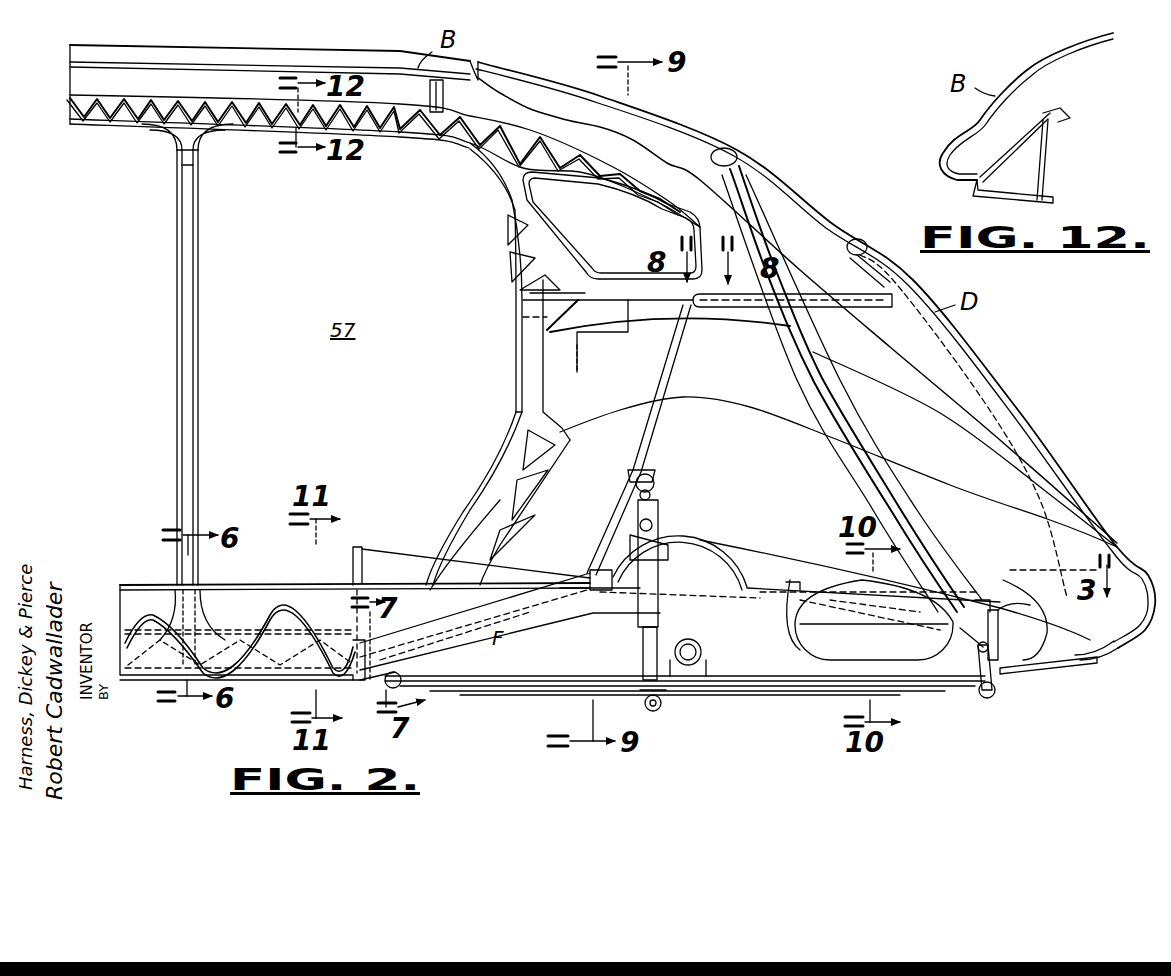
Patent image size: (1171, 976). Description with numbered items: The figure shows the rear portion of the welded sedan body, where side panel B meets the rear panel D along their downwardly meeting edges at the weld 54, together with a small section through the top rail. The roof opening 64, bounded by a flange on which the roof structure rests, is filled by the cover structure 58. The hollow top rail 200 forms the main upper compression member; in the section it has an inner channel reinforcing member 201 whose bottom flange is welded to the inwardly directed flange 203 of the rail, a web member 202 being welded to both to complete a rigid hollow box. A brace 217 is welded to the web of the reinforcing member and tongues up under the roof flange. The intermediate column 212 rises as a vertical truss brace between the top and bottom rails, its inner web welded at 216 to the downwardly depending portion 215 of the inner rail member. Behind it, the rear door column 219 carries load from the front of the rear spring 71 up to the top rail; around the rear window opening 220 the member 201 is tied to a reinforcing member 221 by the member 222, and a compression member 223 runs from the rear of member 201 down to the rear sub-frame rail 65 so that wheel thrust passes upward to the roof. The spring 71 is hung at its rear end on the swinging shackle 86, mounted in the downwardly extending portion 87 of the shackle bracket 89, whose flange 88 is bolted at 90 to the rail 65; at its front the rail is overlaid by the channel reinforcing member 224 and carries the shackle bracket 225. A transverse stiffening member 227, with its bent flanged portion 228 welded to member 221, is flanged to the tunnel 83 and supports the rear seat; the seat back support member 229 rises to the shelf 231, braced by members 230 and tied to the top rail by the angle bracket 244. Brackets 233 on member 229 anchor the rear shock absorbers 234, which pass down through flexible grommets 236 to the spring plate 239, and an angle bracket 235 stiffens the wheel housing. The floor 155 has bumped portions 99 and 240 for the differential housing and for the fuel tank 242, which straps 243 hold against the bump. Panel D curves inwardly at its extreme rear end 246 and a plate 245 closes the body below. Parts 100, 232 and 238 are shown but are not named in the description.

In FIG. 2, the welded joint 54 is at (992, 372).
In FIG. 2, the cover structure 58 is at (70, 50).
In FIG. 2, the roof opening 64 is at (70, 70).
In FIG. 2, the rear sub-frame side rail 65 is at (775, 572).
In FIG. 2, the rear supporting spring 71 is at (760, 680).
In FIG. 2, the tunnel 83 is at (237, 632).
In FIG. 2, the swinging shackle 86 is at (980, 662).
In FIG. 2, the downwardly extending portion 87 is at (1015, 645).
In FIG. 2, the flange 88 is at (874, 620).
In FIG. 2, the shackle bracket 89 is at (1022, 608).
In FIG. 2, the bolt 90 is at (990, 604).
In FIG. 2, the bumped portion 99 is at (692, 542).
In FIG. 2, the spring bushing 100 is at (694, 642).
In FIG. 2, the floor 155 is at (239, 671).
In FIG. 12, the top rail 200 is at (952, 140).
In FIG. 2, the inner channel reinforcing member 201 is at (462, 165).
In FIG. 12, the inner channel reinforcing member 201 is at (1060, 118).
In FIG. 12, the web member 202 is at (1028, 133).
In FIG. 12, the inwardly directed flange 203 is at (975, 195).
In FIG. 2, the intermediate column 212 is at (193, 262).
In FIG. 2, the downwardly depending portion 215 is at (200, 140).
In FIG. 2, the weld 216 is at (198, 170).
In FIG. 2, the brace 217 is at (409, 95).
In FIG. 2, the rear door column 219 is at (506, 222).
In FIG. 2, the rear window opening 220 is at (612, 225).
In FIG. 2, the reinforcing member 221 is at (472, 500).
In FIG. 2, the connecting member 222 is at (528, 378).
In FIG. 2, the compression member 223 is at (815, 352).
In FIG. 2, the reinforcing member 224 is at (412, 660).
In FIG. 2, the shackle bracket 225 is at (378, 682).
In FIG. 2, the transverse stiffening member 227 is at (352, 556).
In FIG. 2, the bent flanged portion 228 is at (440, 560).
In FIG. 2, the seat back support member 229 is at (598, 545).
In FIG. 2, the brace member 230 is at (668, 380).
In FIG. 2, the shelf 231 is at (806, 308).
In FIG. 2, the belt rail 232 is at (868, 294).
In FIG. 2, the bracket 233 is at (636, 470).
In FIG. 2, the rear shock absorber 234 is at (660, 500).
In FIG. 2, the angle bracket 235 is at (662, 530).
In FIG. 2, the flexible grommet 236 is at (660, 590).
In FIG. 2, the frame side member 238 is at (590, 623).
In FIG. 2, the spring plate 239 is at (662, 708).
In FIG. 2, the bumped portion 240 is at (860, 580).
In FIG. 2, the fuel tank 242 is at (805, 638).
In FIG. 2, the straps 243 is at (792, 612).
In FIG. 2, the angle bracket 244 is at (700, 333).
In FIG. 2, the plate 245 is at (1050, 670).
In FIG. 2, the extreme rear end 246 is at (1150, 625).